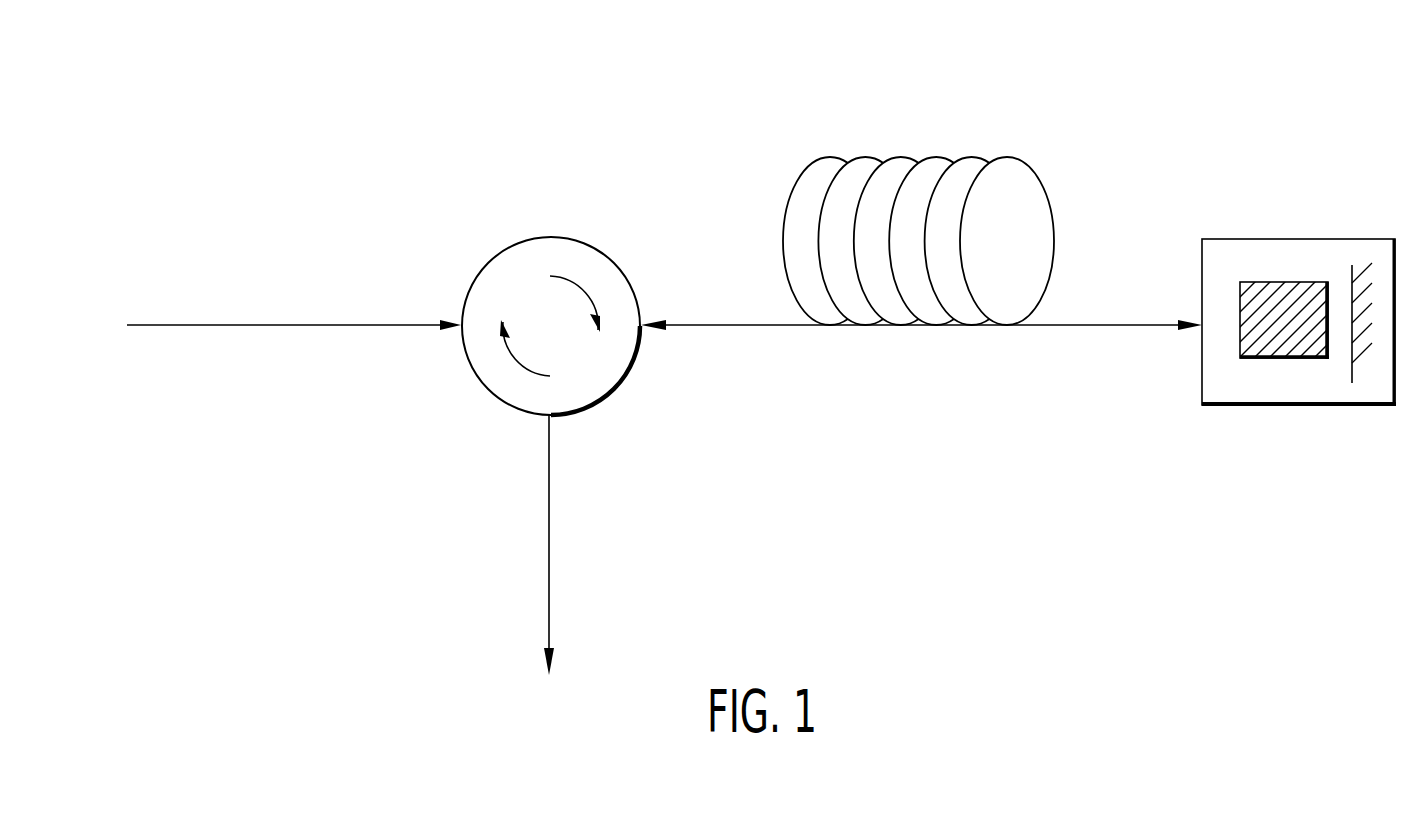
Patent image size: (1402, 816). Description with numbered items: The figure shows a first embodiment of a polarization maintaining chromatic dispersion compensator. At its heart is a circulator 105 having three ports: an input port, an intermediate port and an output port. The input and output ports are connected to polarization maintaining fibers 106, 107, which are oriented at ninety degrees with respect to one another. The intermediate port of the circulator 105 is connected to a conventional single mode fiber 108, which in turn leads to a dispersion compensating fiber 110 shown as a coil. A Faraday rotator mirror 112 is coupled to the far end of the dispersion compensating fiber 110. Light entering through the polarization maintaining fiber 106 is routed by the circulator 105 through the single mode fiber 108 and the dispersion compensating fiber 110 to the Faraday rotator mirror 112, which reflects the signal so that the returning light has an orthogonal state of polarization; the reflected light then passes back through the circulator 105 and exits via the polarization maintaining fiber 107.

The circulator 105 is at (555, 237).
The polarization maintaining fiber 106 is at (293, 322).
The polarization maintaining fiber 107 is at (549, 555).
The single mode fiber 108 is at (745, 327).
The dispersion compensating fiber 110 is at (927, 142).
The Faraday rotator mirror 112 is at (1307, 238).